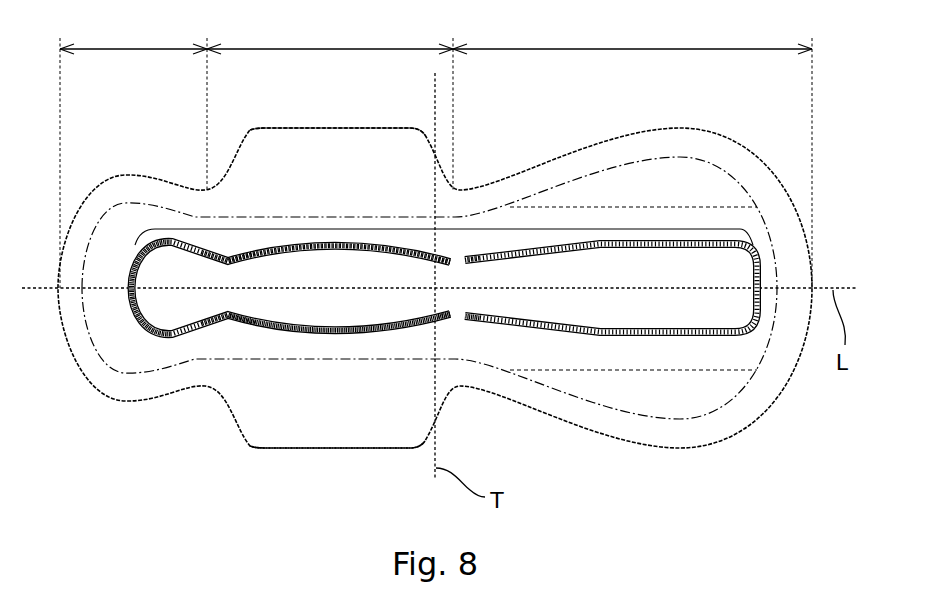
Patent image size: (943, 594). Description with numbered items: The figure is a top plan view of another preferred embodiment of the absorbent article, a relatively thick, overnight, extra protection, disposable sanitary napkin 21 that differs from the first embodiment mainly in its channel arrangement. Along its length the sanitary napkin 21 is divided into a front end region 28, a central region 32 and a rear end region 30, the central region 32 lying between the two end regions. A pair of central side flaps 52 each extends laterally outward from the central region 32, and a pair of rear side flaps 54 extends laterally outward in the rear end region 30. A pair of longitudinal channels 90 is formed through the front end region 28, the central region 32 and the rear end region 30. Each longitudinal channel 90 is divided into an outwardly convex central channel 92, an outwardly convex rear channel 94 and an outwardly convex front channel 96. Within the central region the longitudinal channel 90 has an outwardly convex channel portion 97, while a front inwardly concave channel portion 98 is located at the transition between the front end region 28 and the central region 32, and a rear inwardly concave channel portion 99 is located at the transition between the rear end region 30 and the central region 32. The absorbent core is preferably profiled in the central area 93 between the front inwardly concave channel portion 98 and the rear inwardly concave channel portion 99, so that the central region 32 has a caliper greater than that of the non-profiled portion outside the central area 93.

The sanitary napkin 21 is at (147, 432).
The front end region 28 is at (133, 39).
The central region 32 is at (330, 39).
The rear end region 30 is at (632, 39).
The central side flaps 52 is at (343, 140).
The rear side flaps 54 is at (682, 172).
The longitudinal channels 90 is at (590, 229).
The central channel 92 is at (323, 247).
The central area 93 is at (345, 272).
The rear channel 94 is at (637, 332).
The front channel 96 is at (172, 243).
The outwardly convex channel portion 97 is at (326, 340).
The front inwardly concave channel portion 98 is at (227, 250).
The rear inwardly concave channel portion 99 is at (457, 254).